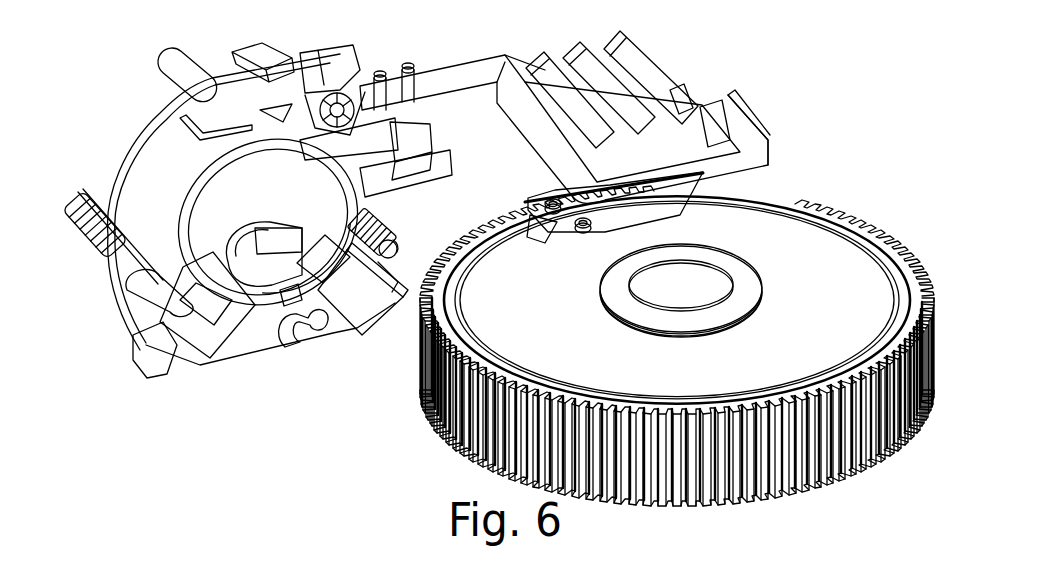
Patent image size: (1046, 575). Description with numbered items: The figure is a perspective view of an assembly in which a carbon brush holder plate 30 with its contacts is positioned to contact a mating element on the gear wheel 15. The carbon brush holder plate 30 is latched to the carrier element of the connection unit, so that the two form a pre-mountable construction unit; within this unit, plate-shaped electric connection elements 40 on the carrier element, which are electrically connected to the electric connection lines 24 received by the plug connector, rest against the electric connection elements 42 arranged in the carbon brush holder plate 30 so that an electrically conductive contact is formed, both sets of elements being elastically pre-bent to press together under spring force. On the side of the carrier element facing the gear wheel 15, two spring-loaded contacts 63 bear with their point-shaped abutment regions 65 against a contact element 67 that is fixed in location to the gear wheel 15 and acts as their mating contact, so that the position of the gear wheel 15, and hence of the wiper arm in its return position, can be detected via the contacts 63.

The gear wheel 15 is at (856, 285).
The carbon brush holder plate 30 is at (128, 140).
The electric connection elements 40 is at (410, 110).
The electric connection elements 42 is at (361, 308).
The electric connection lines 24 is at (603, 118).
The spring-loaded contacts 63 is at (630, 195).
The point-shaped abutment regions 65 is at (545, 212).
The contact element 67 is at (597, 235).